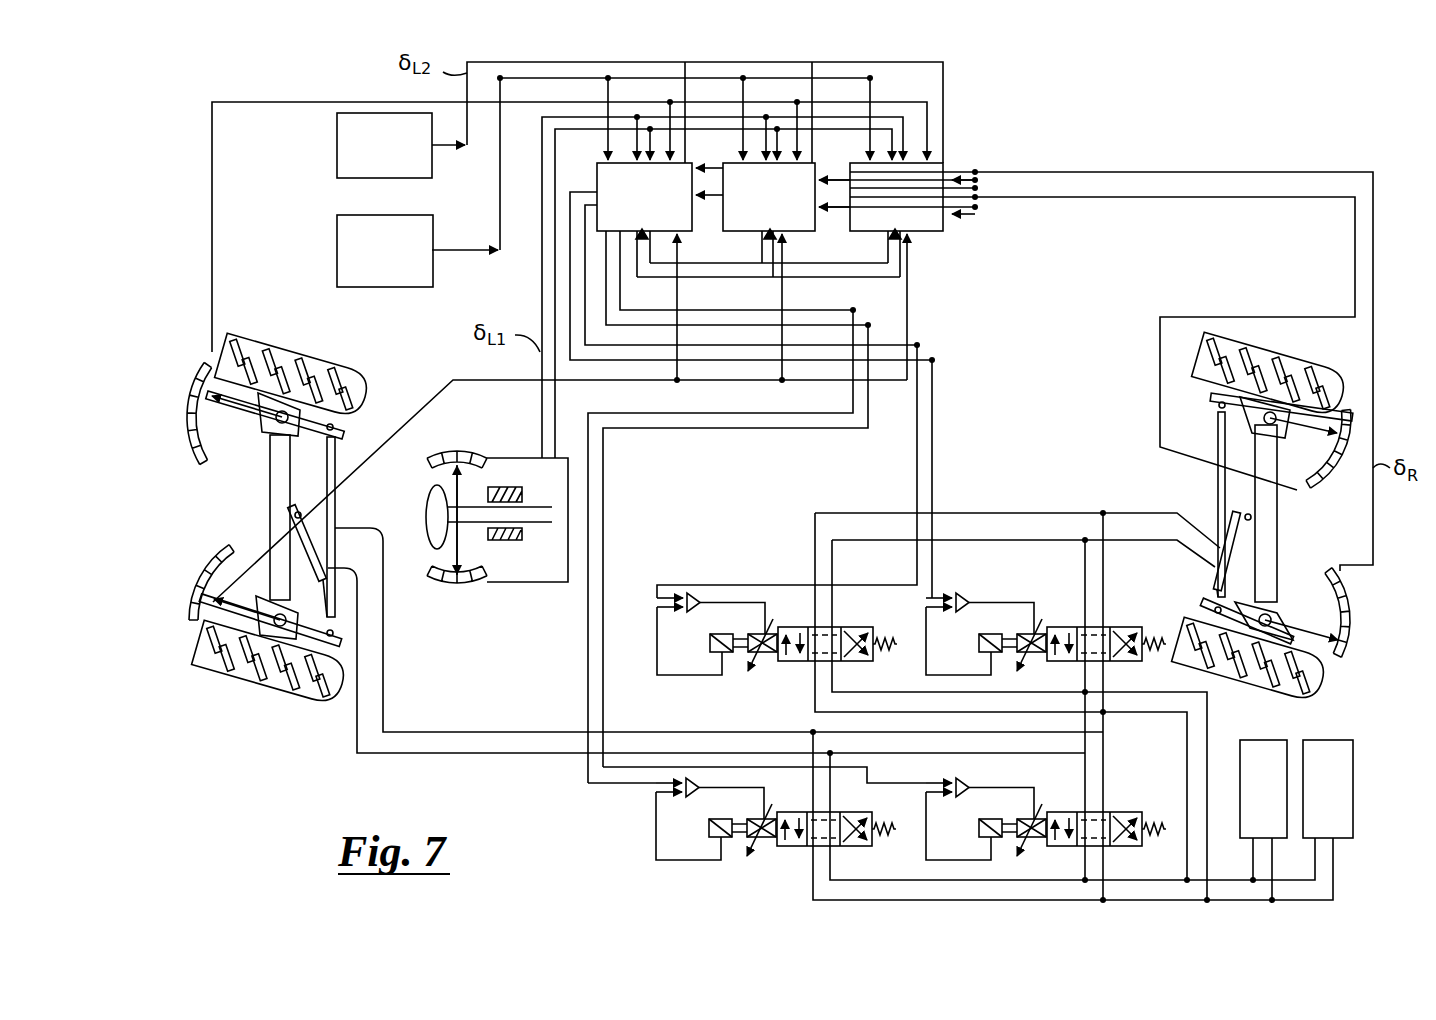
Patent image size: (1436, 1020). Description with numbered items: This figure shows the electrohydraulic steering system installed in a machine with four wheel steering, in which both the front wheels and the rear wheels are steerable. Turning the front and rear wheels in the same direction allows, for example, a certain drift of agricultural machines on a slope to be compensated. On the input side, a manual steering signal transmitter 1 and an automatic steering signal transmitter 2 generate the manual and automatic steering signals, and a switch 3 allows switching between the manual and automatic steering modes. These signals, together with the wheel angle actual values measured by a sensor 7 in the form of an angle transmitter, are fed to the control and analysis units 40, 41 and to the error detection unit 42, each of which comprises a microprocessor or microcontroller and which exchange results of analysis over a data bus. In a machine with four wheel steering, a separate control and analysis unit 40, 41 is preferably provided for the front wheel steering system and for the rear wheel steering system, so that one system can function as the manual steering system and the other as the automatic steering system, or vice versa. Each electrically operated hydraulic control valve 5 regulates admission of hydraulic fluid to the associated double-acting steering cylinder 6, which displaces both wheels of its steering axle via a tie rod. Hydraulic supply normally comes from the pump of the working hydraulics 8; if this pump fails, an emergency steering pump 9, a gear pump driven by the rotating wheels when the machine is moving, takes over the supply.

The manual steering signal transmitter 1 is at (483, 517).
The automatic steering signal transmitter 2 is at (384, 145).
The switch 3 is at (385, 251).
The hydraulic control valve 5 is at (790, 848).
The steering cylinder 6 is at (1217, 543).
The sensor 7 is at (1340, 477).
The pump of the working hydraulics 8 is at (1263, 789).
The emergency steering pump 9 is at (1328, 789).
The control and analysis unit 40 is at (644, 197).
The control and analysis unit 41 is at (896, 197).
The error detection unit 42 is at (769, 197).